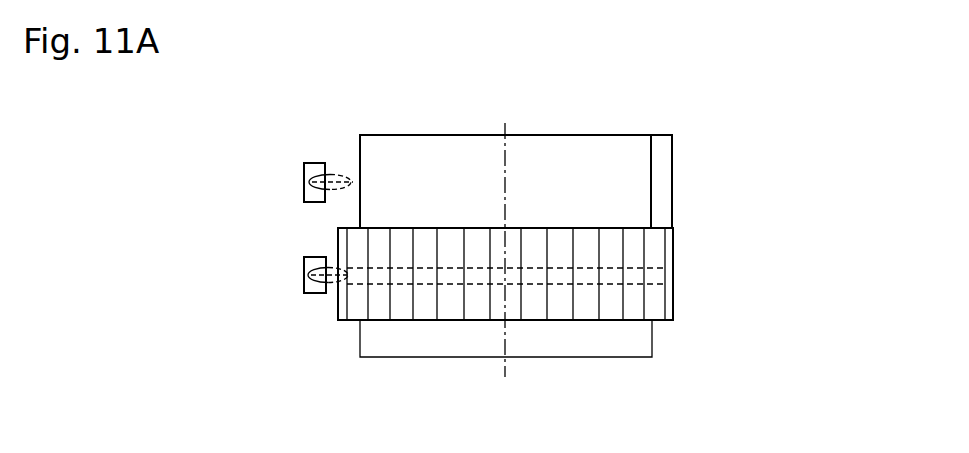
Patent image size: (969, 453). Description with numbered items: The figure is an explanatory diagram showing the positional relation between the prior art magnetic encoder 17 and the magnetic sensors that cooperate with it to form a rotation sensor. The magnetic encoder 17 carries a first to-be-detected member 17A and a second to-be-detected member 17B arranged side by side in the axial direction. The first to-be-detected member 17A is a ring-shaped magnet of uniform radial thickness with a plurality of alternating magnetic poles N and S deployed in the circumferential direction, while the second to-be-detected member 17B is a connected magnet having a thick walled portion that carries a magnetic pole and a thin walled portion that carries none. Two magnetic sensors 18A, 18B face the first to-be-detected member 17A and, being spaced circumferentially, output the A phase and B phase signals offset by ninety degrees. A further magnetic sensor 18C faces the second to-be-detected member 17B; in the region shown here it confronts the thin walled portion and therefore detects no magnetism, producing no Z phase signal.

The magnetic encoder 17 is at (723, 245).
The first to-be-detected member 17A is at (673, 305).
The second to-be-detected member 17B is at (673, 183).
The magnetic sensor 18A is at (303, 277).
The magnetic sensor 18B is at (327, 275).
The magnetic sensor 18C is at (304, 181).